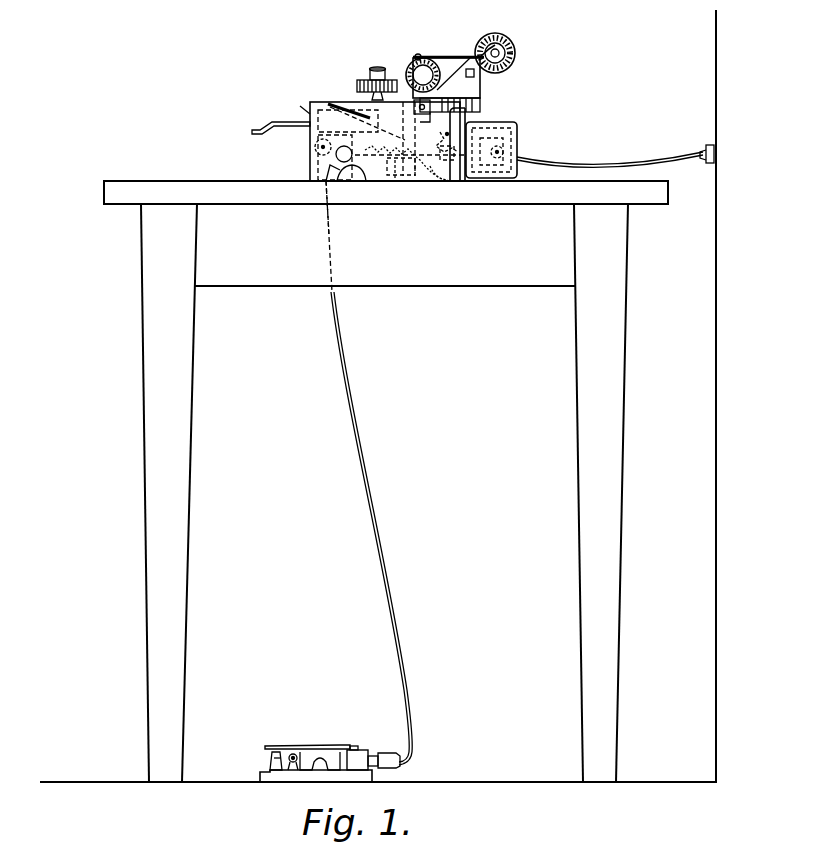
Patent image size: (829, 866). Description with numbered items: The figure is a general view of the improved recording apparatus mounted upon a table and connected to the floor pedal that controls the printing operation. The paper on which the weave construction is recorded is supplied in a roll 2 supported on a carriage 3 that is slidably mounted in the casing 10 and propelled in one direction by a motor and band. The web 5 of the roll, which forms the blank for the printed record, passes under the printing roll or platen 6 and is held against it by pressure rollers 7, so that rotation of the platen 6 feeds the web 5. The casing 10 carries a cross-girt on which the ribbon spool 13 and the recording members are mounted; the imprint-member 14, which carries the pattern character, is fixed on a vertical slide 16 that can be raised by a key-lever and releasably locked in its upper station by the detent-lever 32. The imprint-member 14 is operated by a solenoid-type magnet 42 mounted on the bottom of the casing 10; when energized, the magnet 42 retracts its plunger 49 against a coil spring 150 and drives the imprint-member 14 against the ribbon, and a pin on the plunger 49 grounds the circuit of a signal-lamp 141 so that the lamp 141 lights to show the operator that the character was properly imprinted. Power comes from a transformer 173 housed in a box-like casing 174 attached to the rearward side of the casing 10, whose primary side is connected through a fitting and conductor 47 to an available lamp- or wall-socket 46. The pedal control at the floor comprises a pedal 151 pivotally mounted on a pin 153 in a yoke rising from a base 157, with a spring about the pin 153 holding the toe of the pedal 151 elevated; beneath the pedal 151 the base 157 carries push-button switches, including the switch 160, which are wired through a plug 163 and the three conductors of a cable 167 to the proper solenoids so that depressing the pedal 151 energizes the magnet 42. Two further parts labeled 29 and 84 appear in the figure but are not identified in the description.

The roll 2 is at (515, 62).
The carriage 3 is at (481, 93).
The web 5 is at (484, 55).
The printing roll or platen 6 is at (410, 65).
The pressure rollers 7 is at (418, 55).
The casing 10 is at (311, 170).
The ribbon spool 13 is at (360, 83).
The imprint-member 14 is at (360, 112).
The slide 16 is at (410, 134).
The arm 29 is at (288, 128).
The detent-lever 32 is at (309, 115).
The magnet 42 is at (362, 176).
The lamp- or wall-socket 46 is at (707, 147).
The conductor 47 is at (632, 164).
The solenoid plunger 49 is at (331, 182).
The link 84 is at (420, 182).
The signal-lamp 141 is at (336, 155).
The coil spring 150 is at (452, 181).
The pedal 151 is at (316, 749).
The pin 153 is at (294, 754).
The base 157 is at (262, 773).
The push-button switch 160 is at (357, 744).
The plug 163 is at (388, 760).
The cable 167 is at (370, 512).
The transformer 173 is at (507, 140).
The box-like casing 174 is at (511, 150).